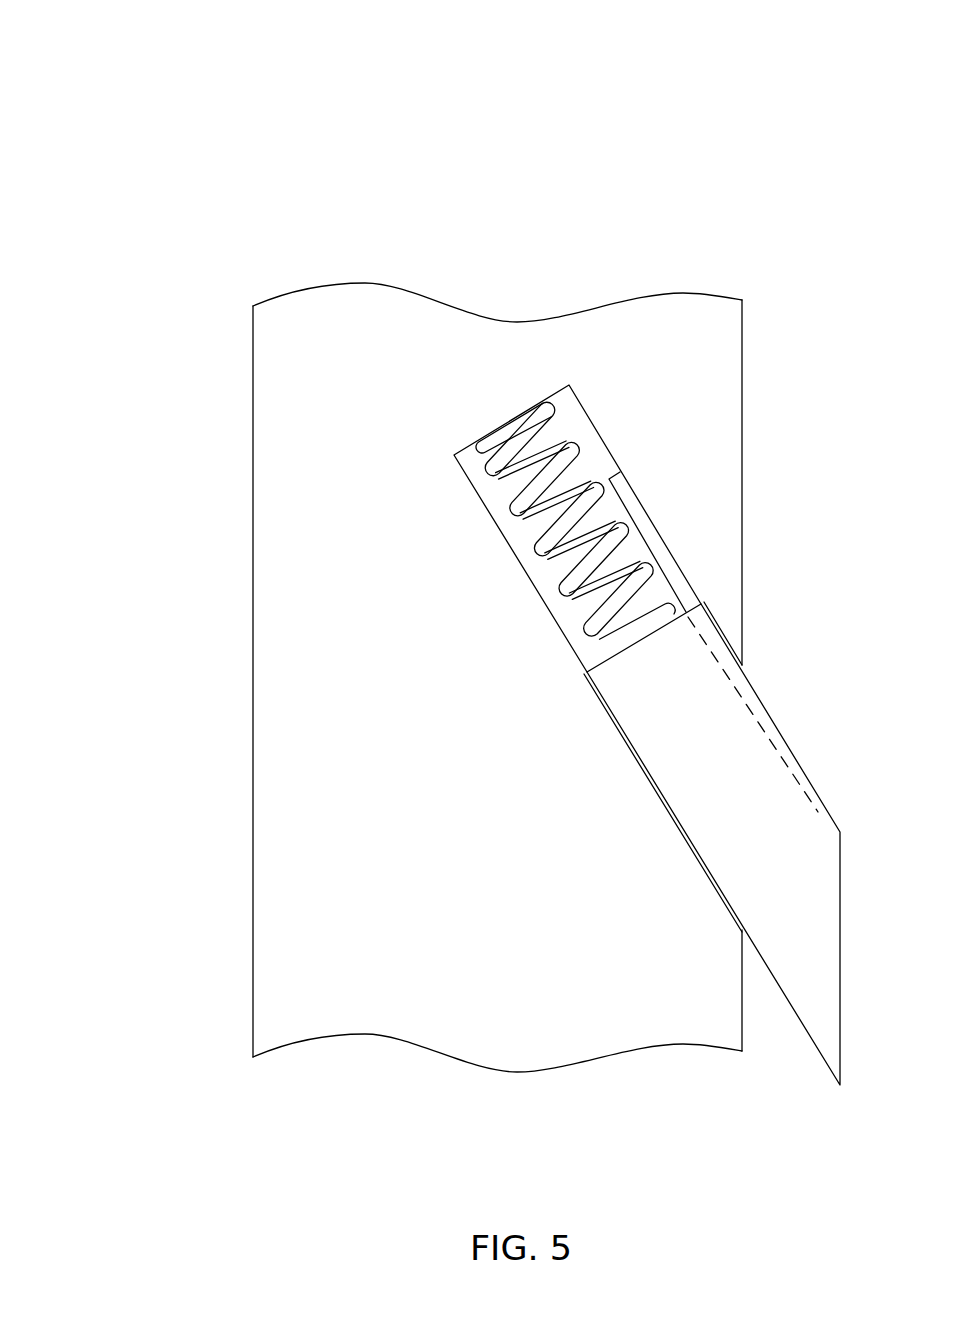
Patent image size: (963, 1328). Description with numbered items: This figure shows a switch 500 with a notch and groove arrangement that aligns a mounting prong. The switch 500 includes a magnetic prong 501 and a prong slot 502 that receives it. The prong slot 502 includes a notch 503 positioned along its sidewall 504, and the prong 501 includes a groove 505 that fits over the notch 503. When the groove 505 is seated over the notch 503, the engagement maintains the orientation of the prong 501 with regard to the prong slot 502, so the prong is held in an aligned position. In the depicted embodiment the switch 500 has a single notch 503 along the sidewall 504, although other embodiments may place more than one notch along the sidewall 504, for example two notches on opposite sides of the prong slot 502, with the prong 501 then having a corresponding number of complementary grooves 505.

The switch 500 is at (136, 60).
The magnetic prong 501 is at (802, 888).
The prong slot 502 is at (480, 622).
The notch 503 is at (617, 474).
The sidewall 504 is at (589, 409).
The groove 505 is at (713, 657).